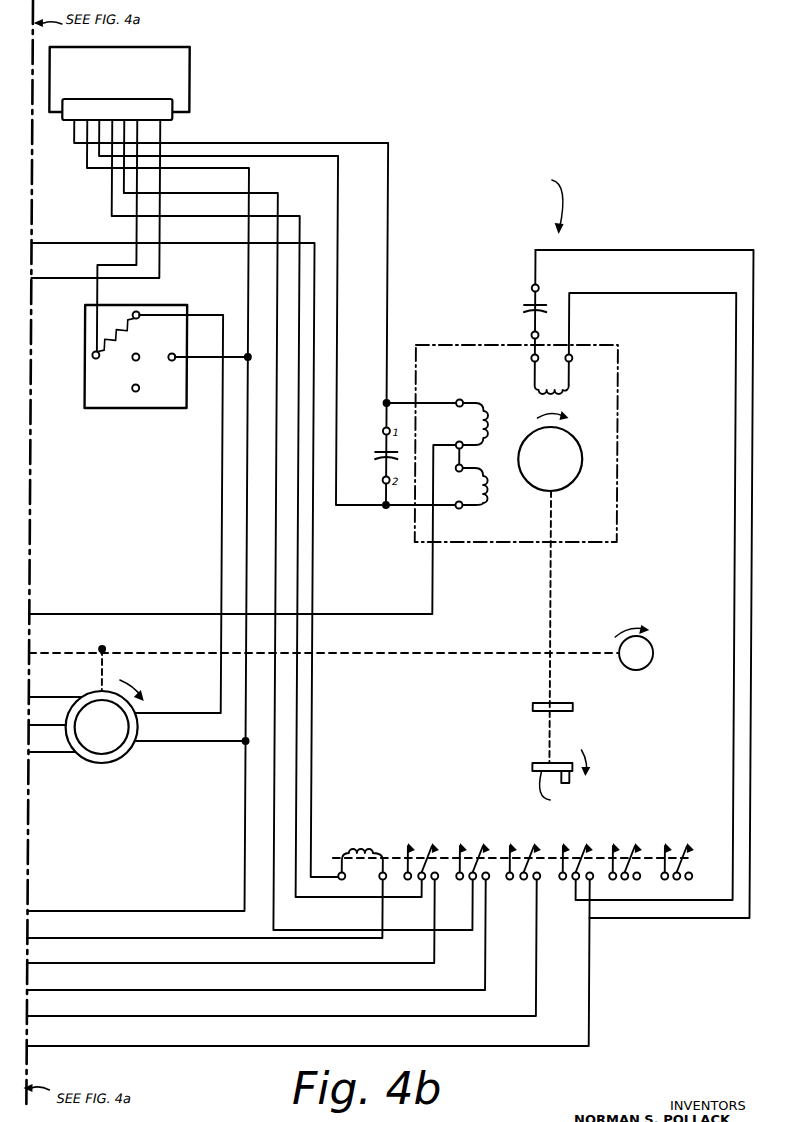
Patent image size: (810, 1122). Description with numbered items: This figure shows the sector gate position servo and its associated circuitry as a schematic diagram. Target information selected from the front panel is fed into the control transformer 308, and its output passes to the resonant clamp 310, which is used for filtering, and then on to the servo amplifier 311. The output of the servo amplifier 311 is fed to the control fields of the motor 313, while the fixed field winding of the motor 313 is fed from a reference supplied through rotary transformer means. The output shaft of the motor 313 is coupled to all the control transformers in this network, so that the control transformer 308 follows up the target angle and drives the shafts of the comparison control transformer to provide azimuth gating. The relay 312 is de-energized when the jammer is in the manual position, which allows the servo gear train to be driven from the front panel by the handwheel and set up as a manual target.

The control transformer 308 is at (106, 745).
The resonant clamp 310 is at (176, 394).
The servo amplifier 311 is at (199, 77).
The relay 312 is at (373, 832).
The motor 313 is at (597, 400).